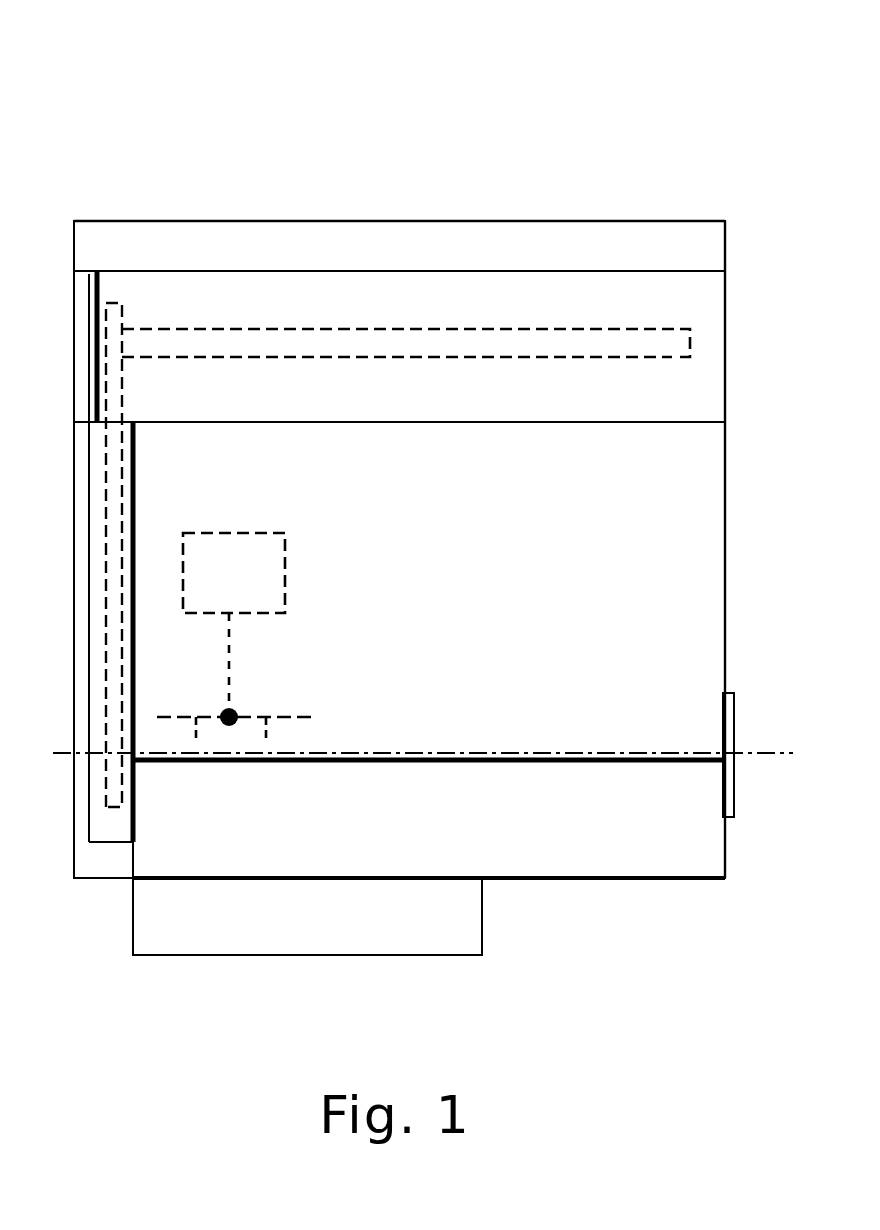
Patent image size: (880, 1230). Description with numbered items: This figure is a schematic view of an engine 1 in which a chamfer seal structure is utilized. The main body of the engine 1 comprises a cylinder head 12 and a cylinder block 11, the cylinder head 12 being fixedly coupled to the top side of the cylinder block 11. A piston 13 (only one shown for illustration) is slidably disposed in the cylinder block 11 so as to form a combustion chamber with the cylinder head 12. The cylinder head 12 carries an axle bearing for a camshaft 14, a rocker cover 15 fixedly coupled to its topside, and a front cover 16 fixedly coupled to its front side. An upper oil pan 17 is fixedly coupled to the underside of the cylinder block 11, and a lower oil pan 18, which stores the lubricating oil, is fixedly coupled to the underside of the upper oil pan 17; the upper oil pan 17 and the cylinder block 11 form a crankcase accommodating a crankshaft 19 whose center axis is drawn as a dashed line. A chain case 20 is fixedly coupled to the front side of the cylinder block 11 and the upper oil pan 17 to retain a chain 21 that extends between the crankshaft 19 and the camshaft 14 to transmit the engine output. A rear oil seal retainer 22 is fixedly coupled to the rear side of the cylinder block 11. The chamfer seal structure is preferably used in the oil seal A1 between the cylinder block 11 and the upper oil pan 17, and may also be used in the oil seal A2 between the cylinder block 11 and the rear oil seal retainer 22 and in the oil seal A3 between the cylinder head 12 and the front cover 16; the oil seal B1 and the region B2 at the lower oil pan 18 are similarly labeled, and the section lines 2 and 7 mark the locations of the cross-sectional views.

The engine 1 is at (622, 178).
The rocker cover 15 is at (678, 220).
The cylinder head 12 is at (725, 306).
The cylinder block 11 is at (725, 478).
The camshaft 14 is at (678, 358).
The front cover 16 is at (74, 322).
The oil seal A3 is at (99, 278).
The chain case 20 is at (89, 486).
The chain 21 is at (106, 592).
The piston 13 is at (185, 533).
The crankshaft 19 is at (768, 753).
The rear oil seal retainer 22 is at (735, 770).
The oil seal A2 is at (724, 696).
The oil seal A1 is at (160, 763).
The region B2 is at (135, 826).
The oil seal B1 is at (162, 882).
The upper oil pan 17 is at (690, 880).
The lower oil pan 18 is at (184, 960).
The section line 7 is at (385, 917).
The section line 2 is at (620, 818).